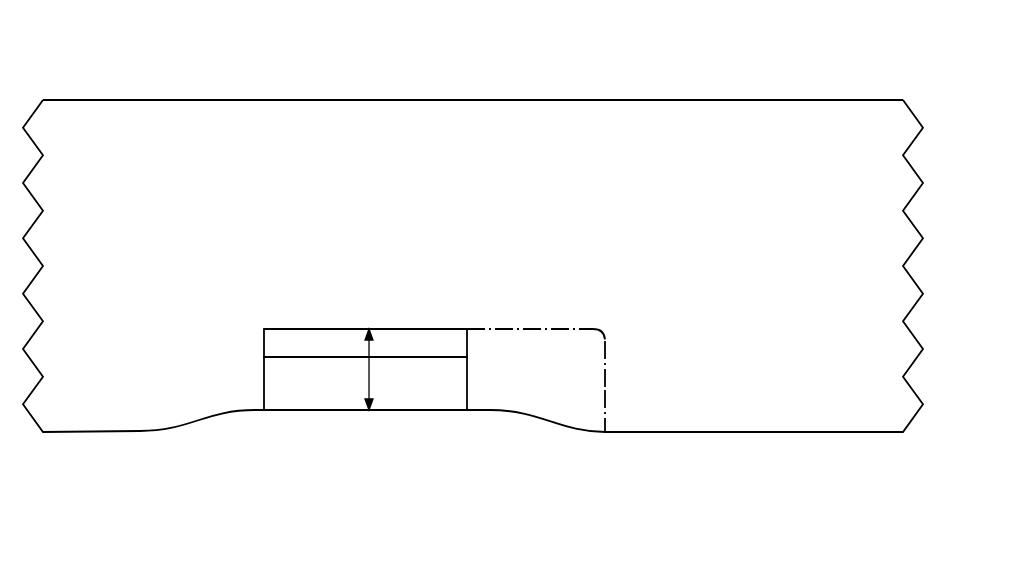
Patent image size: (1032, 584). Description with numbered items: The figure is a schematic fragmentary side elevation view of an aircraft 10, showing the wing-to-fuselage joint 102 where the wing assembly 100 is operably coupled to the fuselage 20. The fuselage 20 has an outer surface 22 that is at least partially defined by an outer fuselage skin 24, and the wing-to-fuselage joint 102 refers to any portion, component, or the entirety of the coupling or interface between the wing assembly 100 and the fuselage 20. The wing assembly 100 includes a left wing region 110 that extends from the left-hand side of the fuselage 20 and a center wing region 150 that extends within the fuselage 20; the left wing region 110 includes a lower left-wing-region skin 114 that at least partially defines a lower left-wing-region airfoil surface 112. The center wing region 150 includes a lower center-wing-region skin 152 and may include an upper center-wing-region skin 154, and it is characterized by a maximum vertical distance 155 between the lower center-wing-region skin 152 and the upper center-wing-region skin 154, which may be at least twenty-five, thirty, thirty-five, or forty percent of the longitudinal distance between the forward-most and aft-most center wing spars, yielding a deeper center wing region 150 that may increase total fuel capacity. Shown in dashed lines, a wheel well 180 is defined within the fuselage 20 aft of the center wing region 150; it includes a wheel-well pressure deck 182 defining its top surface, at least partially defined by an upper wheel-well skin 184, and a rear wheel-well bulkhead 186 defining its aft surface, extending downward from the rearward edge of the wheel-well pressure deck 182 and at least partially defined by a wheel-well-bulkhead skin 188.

The aircraft 10 is at (166, 68).
The fuselage 20 is at (268, 80).
The outer surface 22 is at (308, 99).
The outer fuselage skin 24 is at (407, 99).
The wing assembly 100 is at (258, 277).
The wing-to-fuselage joint 102 is at (253, 418).
The left wing region 110 is at (323, 318).
The lower left-wing-region airfoil surface 112 is at (310, 400).
The lower left-wing-region skin 114 is at (358, 400).
The center wing region 150 is at (408, 412).
The lower center-wing-region skin 152 is at (445, 412).
The upper center-wing-region skin 154 is at (404, 329).
The maximum vertical distance 155 is at (372, 378).
The wheel well 180 is at (532, 322).
The wheel-well pressure deck 182 is at (565, 325).
The upper wheel-well skin 184 is at (590, 329).
The rear wheel-well bulkhead 186 is at (607, 367).
The wheel-well-bulkhead skin 188 is at (607, 408).